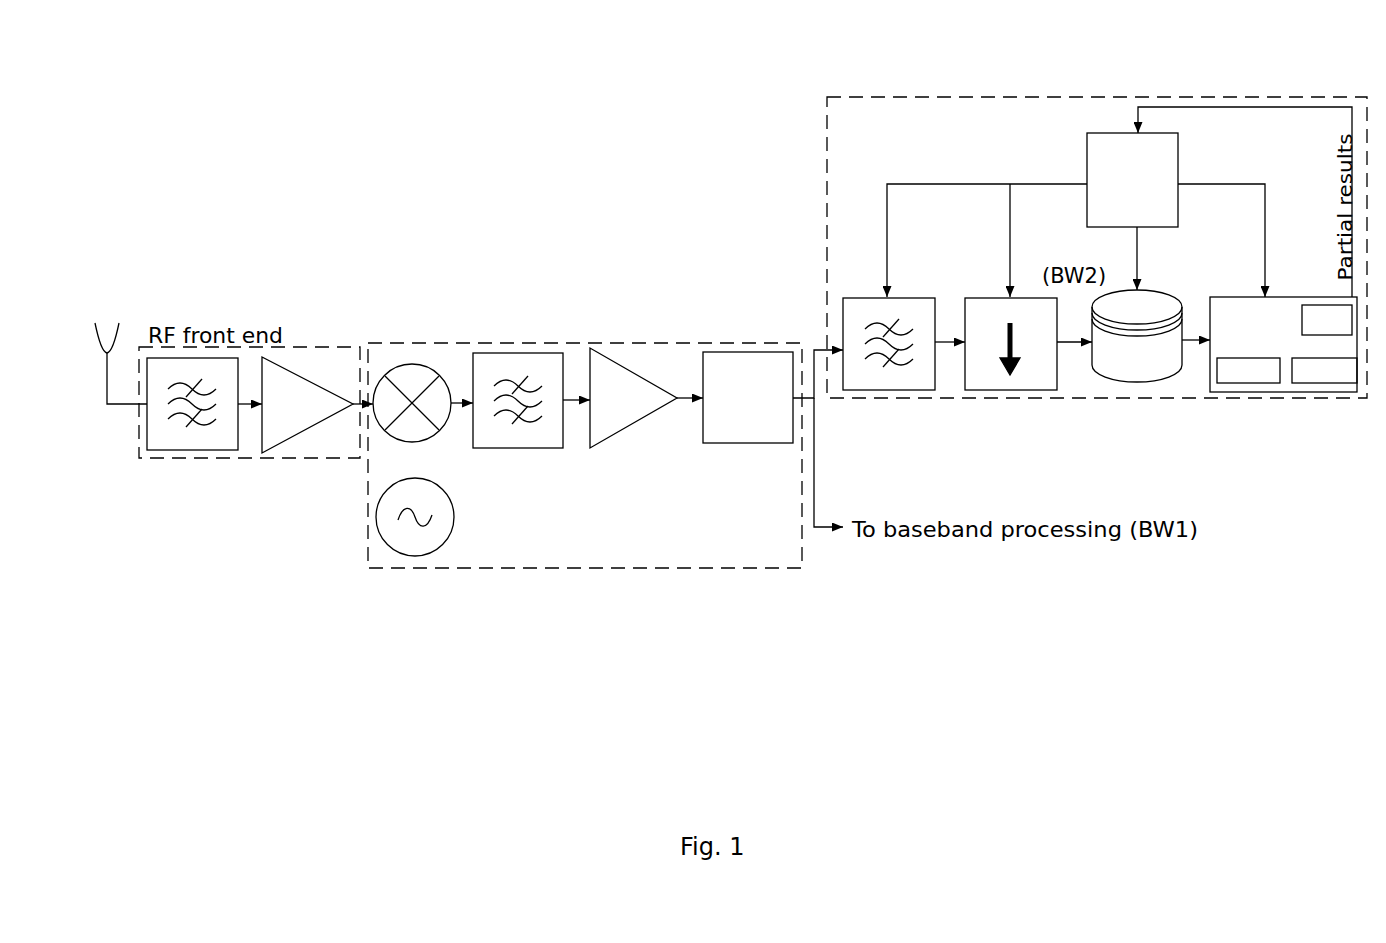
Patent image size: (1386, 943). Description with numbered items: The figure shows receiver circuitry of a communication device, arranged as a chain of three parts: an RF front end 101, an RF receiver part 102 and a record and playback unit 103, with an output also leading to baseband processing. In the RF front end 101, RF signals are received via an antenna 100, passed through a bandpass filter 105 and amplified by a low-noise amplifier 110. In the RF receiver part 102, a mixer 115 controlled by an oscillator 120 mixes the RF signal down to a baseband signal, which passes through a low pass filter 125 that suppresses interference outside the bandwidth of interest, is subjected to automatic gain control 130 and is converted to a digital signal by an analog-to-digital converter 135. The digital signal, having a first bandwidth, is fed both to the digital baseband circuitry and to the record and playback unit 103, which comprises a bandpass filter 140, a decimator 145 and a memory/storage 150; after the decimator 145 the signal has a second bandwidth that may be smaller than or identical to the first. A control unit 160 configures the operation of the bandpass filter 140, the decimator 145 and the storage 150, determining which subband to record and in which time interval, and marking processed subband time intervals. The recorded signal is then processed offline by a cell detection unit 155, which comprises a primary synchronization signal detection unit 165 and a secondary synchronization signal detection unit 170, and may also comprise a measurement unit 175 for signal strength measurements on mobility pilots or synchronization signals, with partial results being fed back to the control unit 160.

The antenna 100 is at (107, 327).
The RF front end 101 is at (308, 347).
The RF receiver part 102 is at (712, 568).
The Record and playback unit 103 is at (1130, 97).
The bandpass filter 105 is at (202, 452).
The low-noise amplifier 110 is at (290, 433).
The mixer 115 is at (405, 365).
The oscillator 120 is at (415, 555).
The low pass filter 125 is at (527, 365).
The automatic gain control 130 is at (655, 382).
The analog-to-digital converter 135 is at (747, 355).
The bandpass filter 140 is at (882, 392).
The decimator 145 is at (1028, 392).
The memory/storage 150 is at (1155, 380).
The cell detection unit 155 is at (1287, 297).
The control unit 160 is at (1087, 160).
The Primary Synchronization Signal detection unit 165 is at (1253, 385).
The Secondary Synchronization Signal detection unit 170 is at (1323, 385).
The measurement unit 175 is at (1325, 312).